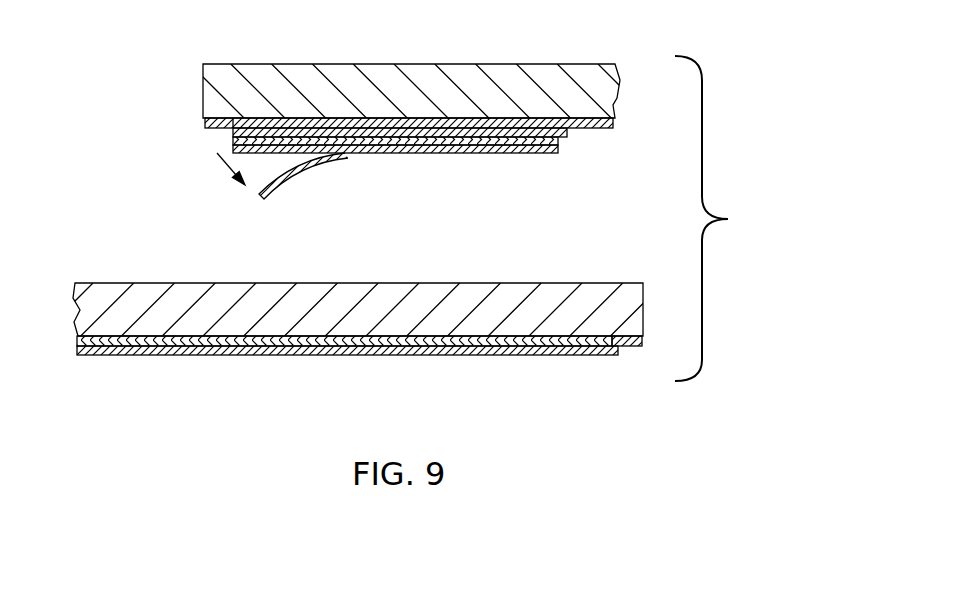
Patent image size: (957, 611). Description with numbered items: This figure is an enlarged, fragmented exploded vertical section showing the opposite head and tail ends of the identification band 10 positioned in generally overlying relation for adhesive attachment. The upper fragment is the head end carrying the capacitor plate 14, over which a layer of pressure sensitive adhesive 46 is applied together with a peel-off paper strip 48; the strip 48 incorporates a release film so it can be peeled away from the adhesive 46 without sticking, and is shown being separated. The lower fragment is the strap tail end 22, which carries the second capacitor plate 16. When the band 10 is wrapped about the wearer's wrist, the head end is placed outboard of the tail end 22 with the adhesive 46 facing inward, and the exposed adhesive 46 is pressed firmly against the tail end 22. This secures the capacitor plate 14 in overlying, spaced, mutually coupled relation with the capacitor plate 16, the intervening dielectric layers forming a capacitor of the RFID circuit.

The identification band 10 is at (760, 211).
The capacitor plate 14 is at (380, 77).
The capacitor plate 16 is at (359, 365).
The tail end 22 is at (372, 294).
The pressure sensitive adhesive 46 is at (395, 166).
The peel-off paper strip 48 is at (305, 180).